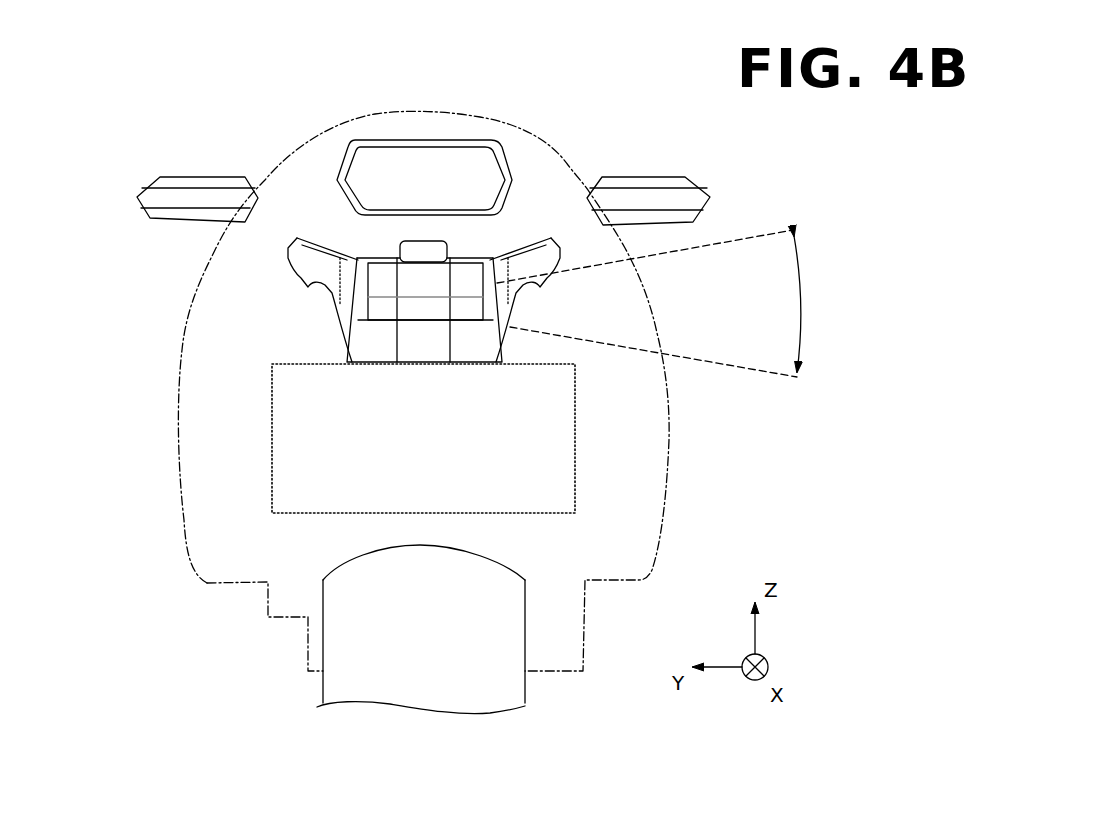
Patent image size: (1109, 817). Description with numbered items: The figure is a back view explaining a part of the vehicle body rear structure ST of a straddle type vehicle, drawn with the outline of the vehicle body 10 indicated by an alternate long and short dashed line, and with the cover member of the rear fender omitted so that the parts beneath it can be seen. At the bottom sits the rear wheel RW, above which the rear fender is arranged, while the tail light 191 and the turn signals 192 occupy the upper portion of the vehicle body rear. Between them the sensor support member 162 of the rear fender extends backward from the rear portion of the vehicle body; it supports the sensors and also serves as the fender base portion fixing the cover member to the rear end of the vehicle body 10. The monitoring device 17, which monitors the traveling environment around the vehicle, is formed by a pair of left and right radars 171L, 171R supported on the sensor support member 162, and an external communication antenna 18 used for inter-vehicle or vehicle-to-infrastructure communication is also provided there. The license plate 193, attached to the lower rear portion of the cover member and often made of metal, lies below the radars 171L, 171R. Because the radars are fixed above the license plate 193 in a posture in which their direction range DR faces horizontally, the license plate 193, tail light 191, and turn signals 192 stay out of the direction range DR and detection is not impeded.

The vehicle body 10 is at (177, 387).
The monitoring device 17 is at (300, 307).
The external communication antenna 18 is at (415, 240).
The sensor support member 162 is at (318, 240).
The radar 171L is at (337, 275).
The radar 171R is at (549, 236).
The tail light 191 is at (503, 150).
The turn signals 192 is at (178, 177).
The license plate 193 is at (575, 457).
The rear wheel RW is at (323, 686).
The vehicle body rear structure ST is at (155, 531).
The direction range DR is at (670, 303).